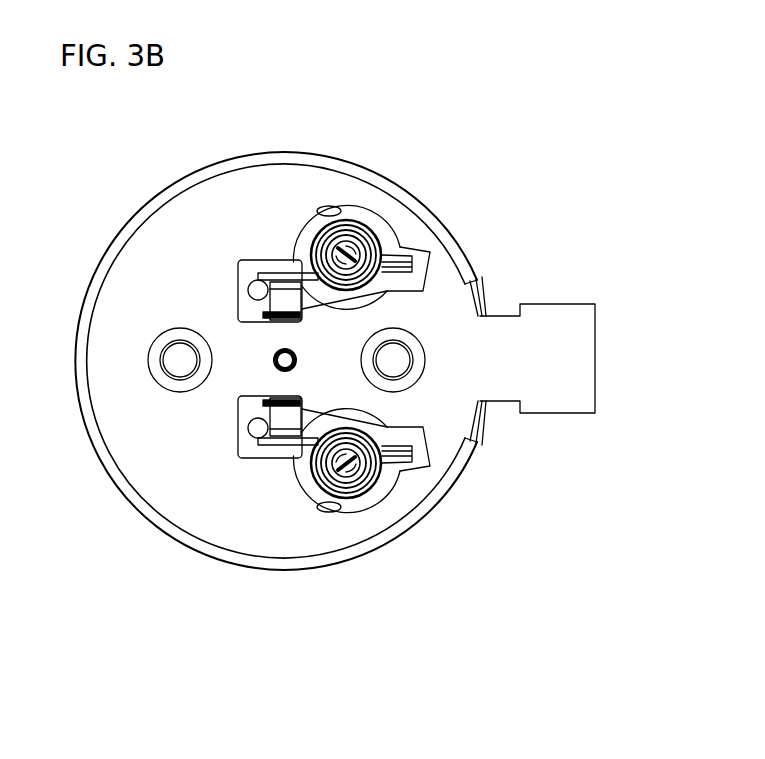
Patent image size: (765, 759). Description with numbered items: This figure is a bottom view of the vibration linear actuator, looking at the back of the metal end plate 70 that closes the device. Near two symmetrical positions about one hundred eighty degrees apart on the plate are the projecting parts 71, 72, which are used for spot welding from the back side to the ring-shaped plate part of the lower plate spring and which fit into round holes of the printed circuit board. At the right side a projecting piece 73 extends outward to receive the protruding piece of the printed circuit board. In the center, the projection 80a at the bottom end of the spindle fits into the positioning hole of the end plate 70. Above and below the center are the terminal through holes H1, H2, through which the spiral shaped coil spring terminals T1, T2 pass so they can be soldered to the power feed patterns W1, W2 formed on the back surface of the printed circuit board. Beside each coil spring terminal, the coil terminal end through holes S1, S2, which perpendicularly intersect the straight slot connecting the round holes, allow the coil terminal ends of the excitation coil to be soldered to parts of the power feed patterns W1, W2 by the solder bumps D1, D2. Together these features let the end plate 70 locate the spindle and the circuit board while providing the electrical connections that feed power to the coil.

The metal end plate 70 is at (376, 566).
The projecting part 71 is at (160, 350).
The projecting part 72 is at (395, 362).
The projecting piece 73 is at (597, 356).
The projection 80a is at (277, 360).
The terminal through hole H1 is at (341, 208).
The terminal through hole H2 is at (330, 520).
The coil spring terminal T1 is at (370, 229).
The coil spring terminal T2 is at (362, 503).
The power feed pattern W1 is at (393, 294).
The power feed pattern W2 is at (385, 422).
The coil terminal end through hole S1 is at (290, 322).
The coil terminal end through hole S2 is at (310, 408).
The solder bump D1 is at (250, 288).
The solder bump D2 is at (257, 432).